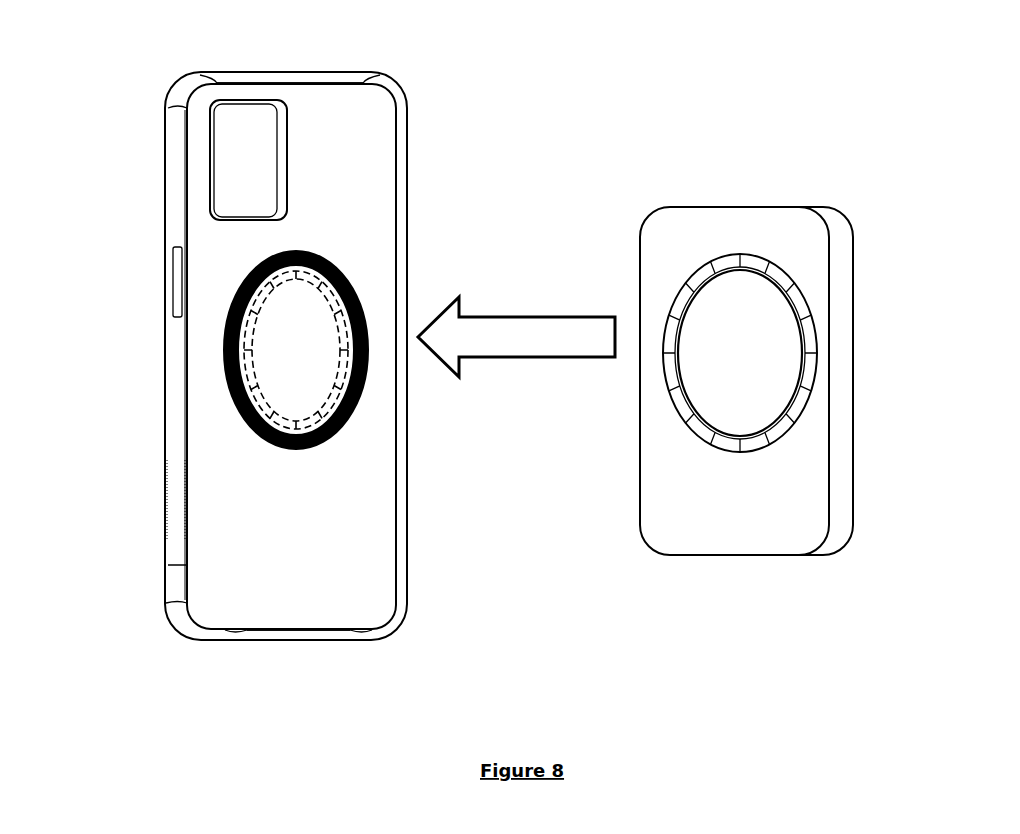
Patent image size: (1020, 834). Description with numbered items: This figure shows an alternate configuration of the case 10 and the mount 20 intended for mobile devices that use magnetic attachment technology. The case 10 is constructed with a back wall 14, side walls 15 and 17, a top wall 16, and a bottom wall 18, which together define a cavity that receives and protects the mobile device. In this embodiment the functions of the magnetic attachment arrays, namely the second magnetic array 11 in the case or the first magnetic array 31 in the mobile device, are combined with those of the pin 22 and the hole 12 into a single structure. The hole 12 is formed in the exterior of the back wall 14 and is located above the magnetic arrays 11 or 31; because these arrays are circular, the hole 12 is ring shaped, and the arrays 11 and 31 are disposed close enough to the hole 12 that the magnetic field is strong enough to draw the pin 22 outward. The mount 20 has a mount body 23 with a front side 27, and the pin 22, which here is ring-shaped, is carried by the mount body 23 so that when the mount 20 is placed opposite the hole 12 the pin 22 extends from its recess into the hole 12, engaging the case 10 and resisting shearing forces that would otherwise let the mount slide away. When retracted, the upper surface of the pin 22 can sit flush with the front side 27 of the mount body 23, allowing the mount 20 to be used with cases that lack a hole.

The case 10 is at (412, 152).
The second magnetic array 11 is at (263, 337).
The first magnetic array 31 is at (296, 350).
The hole 12 is at (245, 417).
The back wall 14 is at (284, 160).
The side wall 15 is at (180, 203).
The top wall 16 is at (250, 73).
The side wall 17 is at (400, 248).
The bottom wall 18 is at (318, 633).
The mount 20 is at (738, 193).
The pin 22 is at (677, 410).
The mount body 23 is at (846, 318).
The front side 27 is at (734, 381).